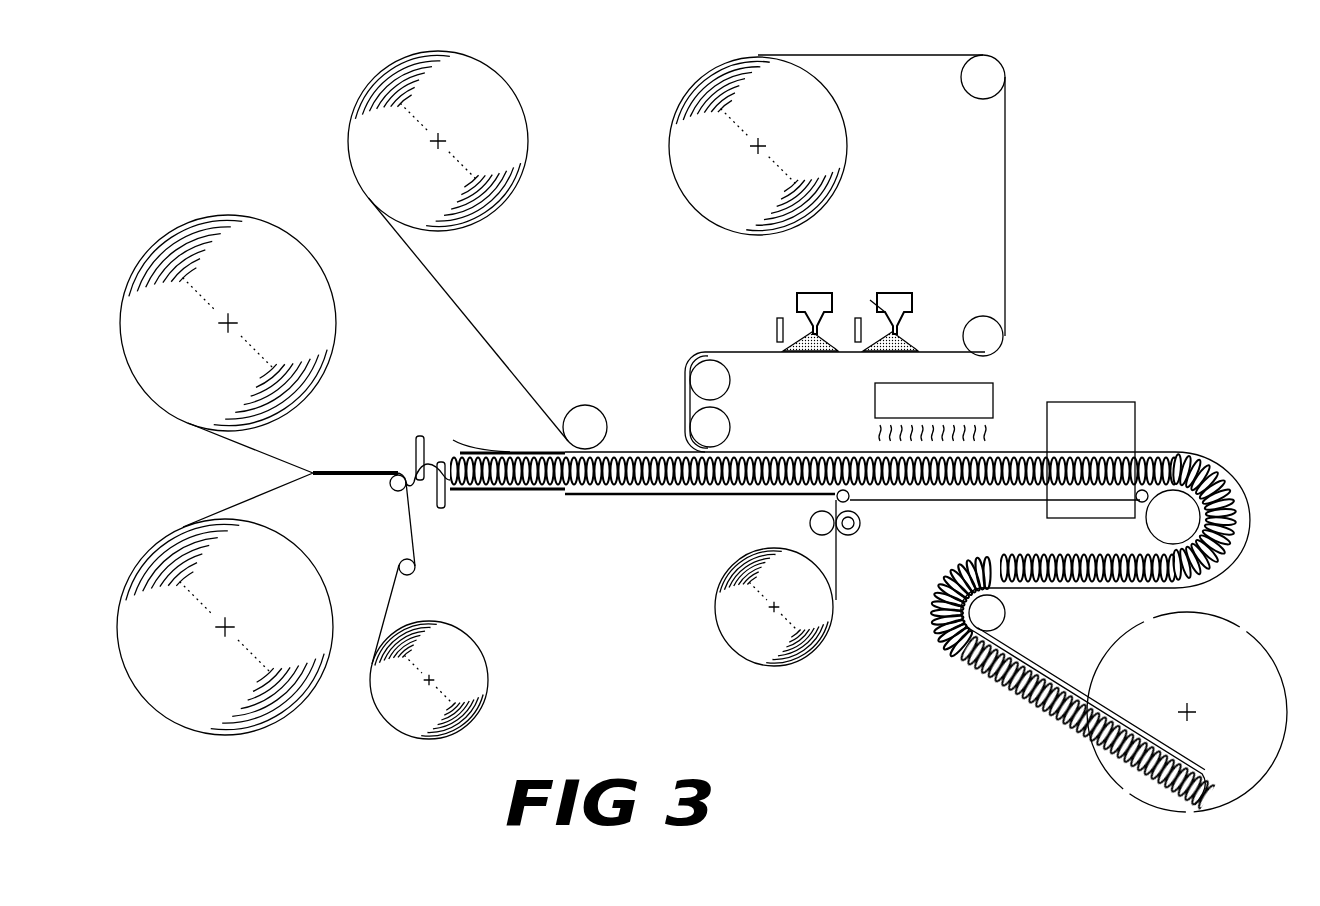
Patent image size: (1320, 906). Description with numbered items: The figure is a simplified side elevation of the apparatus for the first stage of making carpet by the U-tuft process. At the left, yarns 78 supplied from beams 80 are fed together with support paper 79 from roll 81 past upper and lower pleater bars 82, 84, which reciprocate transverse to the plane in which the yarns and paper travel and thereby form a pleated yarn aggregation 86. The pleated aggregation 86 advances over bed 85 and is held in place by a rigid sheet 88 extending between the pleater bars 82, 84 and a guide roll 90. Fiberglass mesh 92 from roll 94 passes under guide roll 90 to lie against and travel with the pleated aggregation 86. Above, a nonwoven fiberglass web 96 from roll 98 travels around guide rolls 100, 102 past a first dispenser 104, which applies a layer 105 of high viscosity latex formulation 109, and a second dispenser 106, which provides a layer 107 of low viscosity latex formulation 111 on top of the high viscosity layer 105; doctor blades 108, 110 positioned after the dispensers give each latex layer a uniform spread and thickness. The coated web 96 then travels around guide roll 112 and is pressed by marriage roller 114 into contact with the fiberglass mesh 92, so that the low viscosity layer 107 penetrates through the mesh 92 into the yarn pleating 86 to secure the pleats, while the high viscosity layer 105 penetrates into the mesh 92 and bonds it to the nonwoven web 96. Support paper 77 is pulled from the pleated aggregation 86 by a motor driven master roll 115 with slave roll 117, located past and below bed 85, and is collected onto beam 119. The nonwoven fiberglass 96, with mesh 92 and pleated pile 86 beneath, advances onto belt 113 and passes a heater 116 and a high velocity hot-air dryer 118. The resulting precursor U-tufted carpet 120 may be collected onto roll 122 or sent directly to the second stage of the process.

The support paper 77 is at (412, 536).
The yarns 78 is at (285, 460).
The support paper 79 is at (390, 485).
The beams 80 is at (162, 237).
The roll 81 is at (488, 653).
The upper pleater bar 82 is at (418, 435).
The lower pleater bar 84 is at (442, 510).
The bed 85 is at (518, 492).
The pleated yarn aggregation 86 is at (575, 495).
The rigid sheet 88 is at (505, 445).
The guide roll 90 is at (593, 407).
The fiberglass mesh 92 is at (472, 322).
The roll 94 is at (503, 207).
The nonwoven fiberglass web 96 is at (885, 54).
The roll 98 is at (688, 92).
The guide roll 100 is at (993, 74).
The guide roll 102 is at (994, 336).
The first dispenser 104 is at (905, 302).
The layer of high viscosity latex formulation 105 is at (858, 316).
The second dispenser 106 is at (827, 293).
The layer of low viscosity latex formulation 107 is at (745, 348).
The doctor blade 108 is at (870, 300).
The high viscosity latex formulation 109 is at (913, 341).
The doctor blade 110 is at (775, 316).
The low viscosity latex formulation 111 is at (815, 352).
The guide roll 112 is at (730, 384).
The belt 113 is at (998, 498).
The marriage roller 114 is at (728, 427).
The master roll 115 is at (856, 535).
The heater 116 is at (996, 384).
The slave roll 117 is at (810, 522).
The high velocity hot-air dryer 118 is at (1098, 402).
The beam 119 is at (737, 655).
The precursor U-tufted carpet 120 is at (1230, 497).
The roll 122 is at (1180, 813).